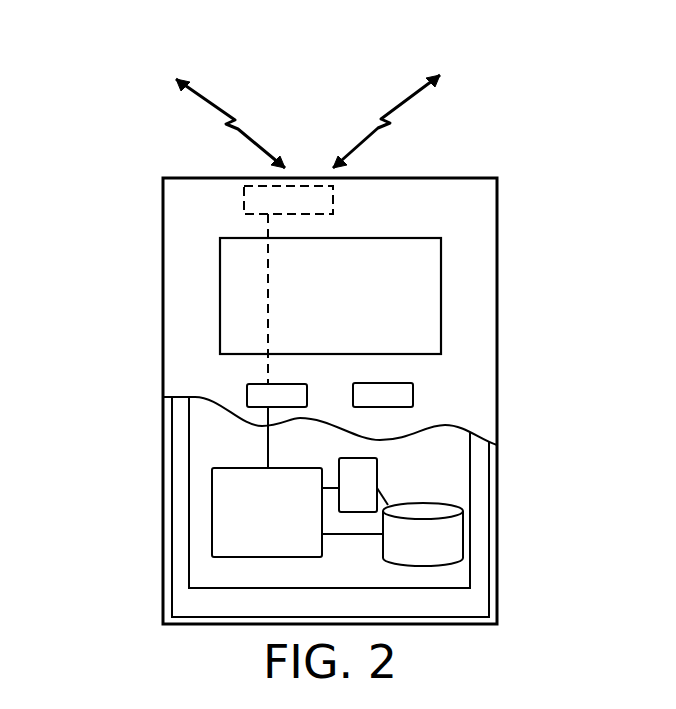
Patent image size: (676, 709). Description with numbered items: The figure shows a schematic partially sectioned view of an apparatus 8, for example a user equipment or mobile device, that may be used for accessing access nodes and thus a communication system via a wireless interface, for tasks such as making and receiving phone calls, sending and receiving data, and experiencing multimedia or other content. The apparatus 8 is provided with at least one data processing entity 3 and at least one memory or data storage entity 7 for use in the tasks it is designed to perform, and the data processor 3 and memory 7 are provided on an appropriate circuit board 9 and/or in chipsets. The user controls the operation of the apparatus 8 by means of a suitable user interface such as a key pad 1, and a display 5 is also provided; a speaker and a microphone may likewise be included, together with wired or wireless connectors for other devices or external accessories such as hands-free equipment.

The apparatus 8 is at (163, 197).
The display 5 is at (428, 251).
The key pad 1 is at (294, 390).
The circuit board 9 is at (378, 468).
The data processing entity 3 is at (225, 488).
The memory 7 is at (456, 553).